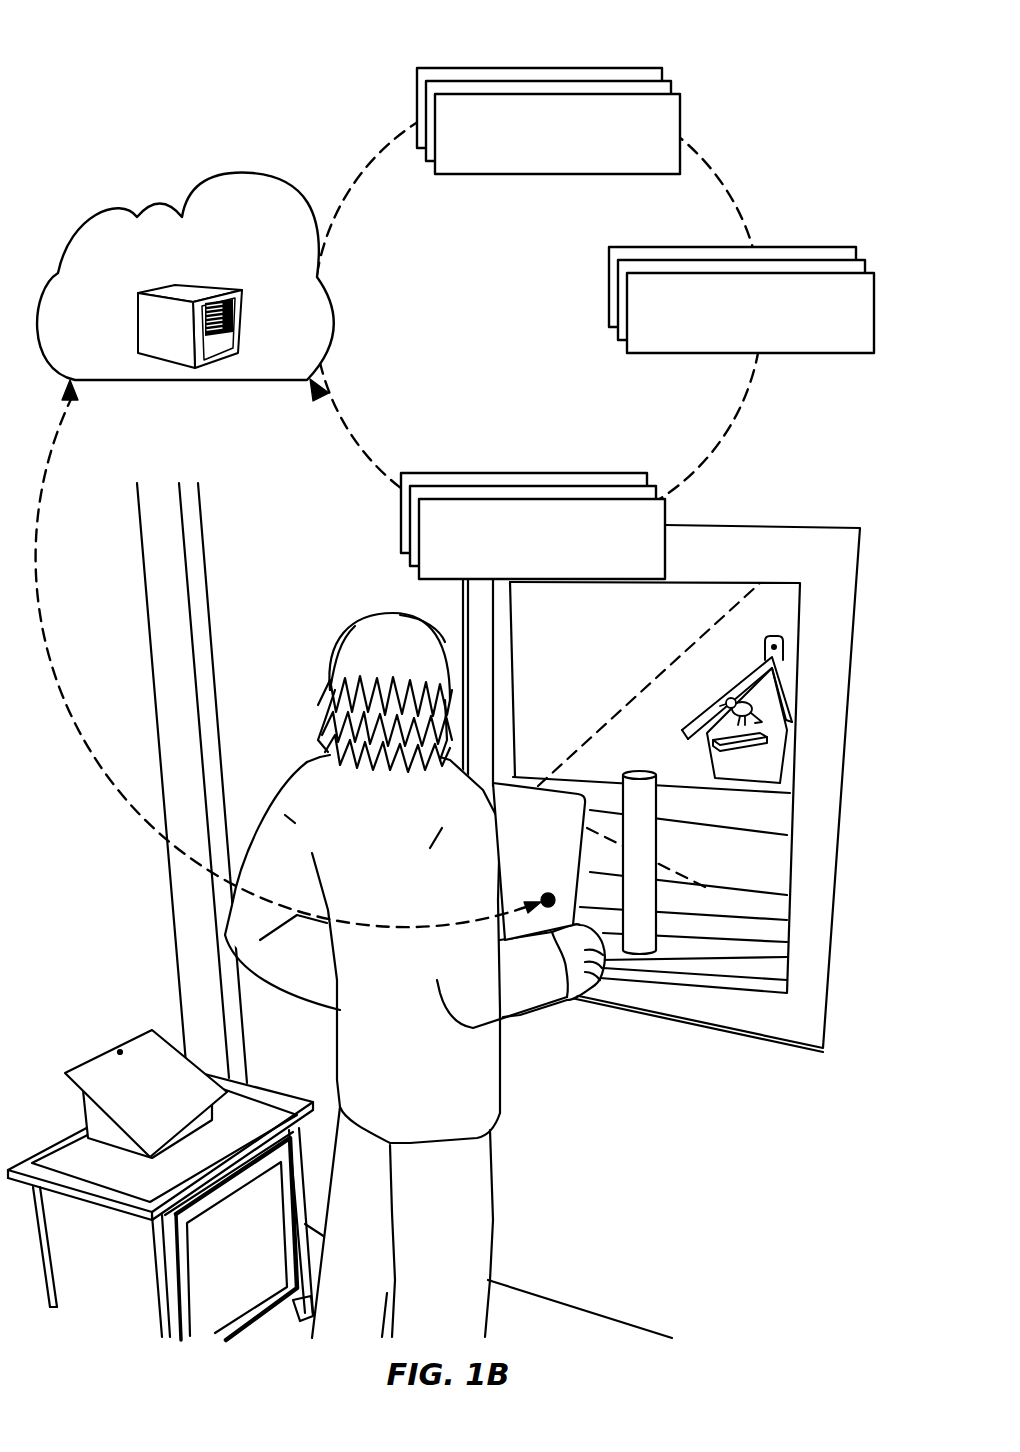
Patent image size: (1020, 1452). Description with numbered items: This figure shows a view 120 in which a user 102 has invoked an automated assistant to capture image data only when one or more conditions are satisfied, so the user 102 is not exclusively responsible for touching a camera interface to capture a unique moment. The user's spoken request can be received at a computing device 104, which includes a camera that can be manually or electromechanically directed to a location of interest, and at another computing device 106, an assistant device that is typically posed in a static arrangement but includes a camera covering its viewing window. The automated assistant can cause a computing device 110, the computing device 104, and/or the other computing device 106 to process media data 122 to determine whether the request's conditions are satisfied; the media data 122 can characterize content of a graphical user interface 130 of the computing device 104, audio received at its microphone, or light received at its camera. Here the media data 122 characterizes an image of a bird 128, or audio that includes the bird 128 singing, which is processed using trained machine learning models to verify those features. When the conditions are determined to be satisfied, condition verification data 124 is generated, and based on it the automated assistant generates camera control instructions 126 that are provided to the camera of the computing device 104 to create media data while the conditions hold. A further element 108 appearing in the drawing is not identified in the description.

The view 120 is at (112, 78).
The computing device 110 is at (188, 338).
The media data 122 is at (572, 156).
The condition verification data 124 is at (766, 346).
The camera control instructions 126 is at (527, 572).
The user 102 is at (347, 826).
The computing device 104 is at (520, 784).
The other computing device 106 is at (133, 1092).
The bird feeder 108 is at (777, 702).
The bird 128 is at (720, 726).
The graphical user interface 130 is at (553, 864).